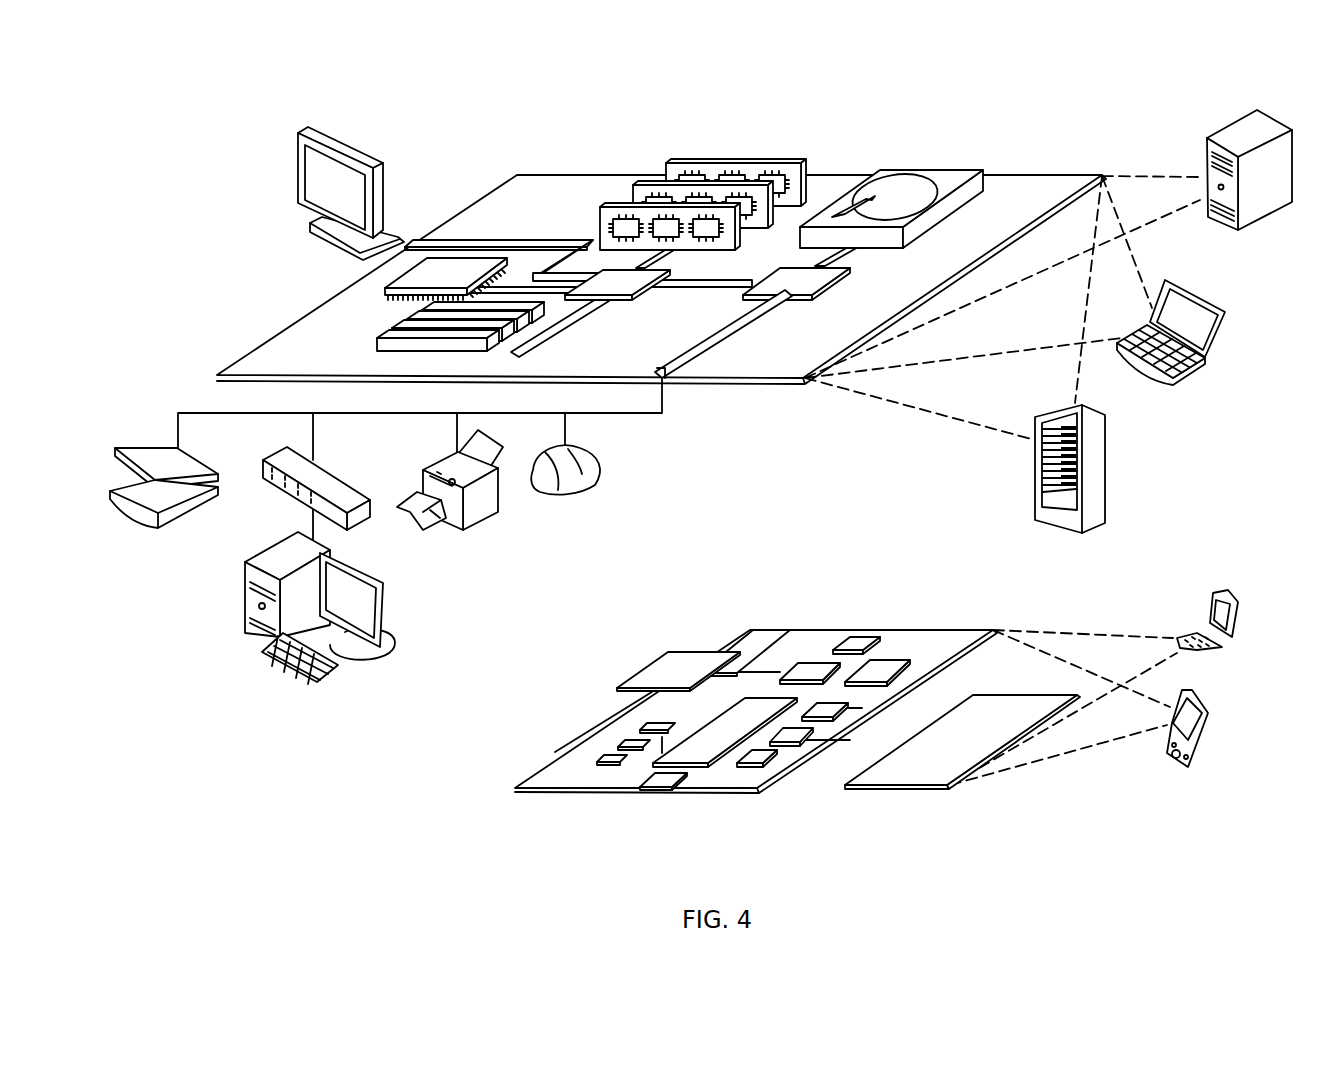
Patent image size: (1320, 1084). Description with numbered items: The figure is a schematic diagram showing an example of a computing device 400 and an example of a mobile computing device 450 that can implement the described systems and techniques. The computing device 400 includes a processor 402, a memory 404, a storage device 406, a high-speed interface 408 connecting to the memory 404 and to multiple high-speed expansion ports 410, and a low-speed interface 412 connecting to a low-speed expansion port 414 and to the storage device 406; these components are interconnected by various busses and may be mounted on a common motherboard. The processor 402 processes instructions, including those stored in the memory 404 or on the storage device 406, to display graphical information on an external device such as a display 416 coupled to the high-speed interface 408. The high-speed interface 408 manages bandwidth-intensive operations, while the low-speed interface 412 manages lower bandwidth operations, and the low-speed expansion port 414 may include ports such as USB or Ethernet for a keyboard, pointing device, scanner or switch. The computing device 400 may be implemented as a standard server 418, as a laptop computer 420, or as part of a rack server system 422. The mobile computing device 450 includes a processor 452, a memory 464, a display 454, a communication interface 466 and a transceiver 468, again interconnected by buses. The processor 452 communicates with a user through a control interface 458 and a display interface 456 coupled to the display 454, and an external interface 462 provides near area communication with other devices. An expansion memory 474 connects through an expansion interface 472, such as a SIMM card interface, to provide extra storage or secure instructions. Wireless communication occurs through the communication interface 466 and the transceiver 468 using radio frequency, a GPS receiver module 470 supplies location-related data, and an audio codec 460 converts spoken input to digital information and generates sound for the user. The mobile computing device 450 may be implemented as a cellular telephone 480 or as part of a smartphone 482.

The computing device 400 is at (496, 150).
The processor 402 is at (385, 285).
The memory 404 is at (734, 164).
The storage device 406 is at (932, 172).
The high-speed interface 408 is at (617, 300).
The high-speed expansion ports 410 is at (259, 347).
The low-speed interface 412 is at (847, 287).
The low-speed expansion port 414 is at (717, 345).
The display 416 is at (300, 133).
The standard server 418 is at (1212, 136).
The laptop computer 420 is at (1215, 304).
The rack server system 422 is at (1106, 462).
The mobile computing device 450 is at (720, 588).
The processor 452 is at (710, 717).
The display 454 is at (897, 790).
The display interface 456 is at (750, 765).
The control interface 458 is at (788, 743).
The audio codec 460 is at (825, 720).
The external interface 462 is at (660, 793).
The memory 464 is at (597, 760).
The communication interface 466 is at (815, 658).
The transceiver 468 is at (885, 658).
The GPS receiver module 470 is at (866, 636).
The expansion interface 472 is at (733, 655).
The expansion memory 474 is at (648, 665).
The cellular telephone 480 is at (1238, 600).
The smartphone 482 is at (1200, 706).